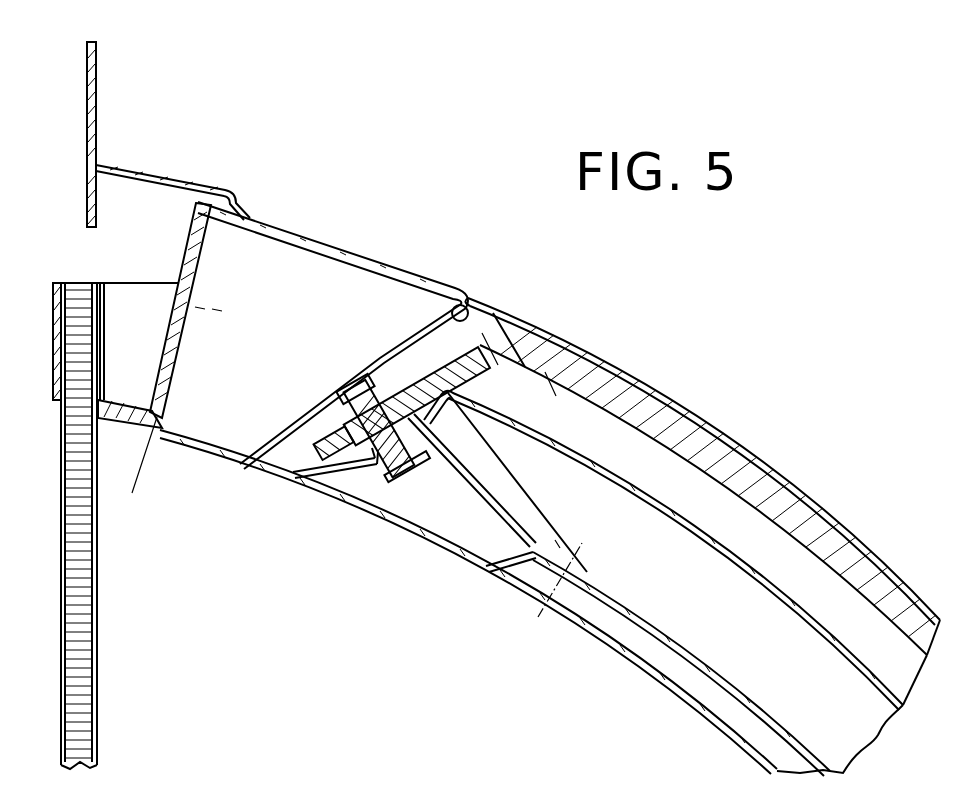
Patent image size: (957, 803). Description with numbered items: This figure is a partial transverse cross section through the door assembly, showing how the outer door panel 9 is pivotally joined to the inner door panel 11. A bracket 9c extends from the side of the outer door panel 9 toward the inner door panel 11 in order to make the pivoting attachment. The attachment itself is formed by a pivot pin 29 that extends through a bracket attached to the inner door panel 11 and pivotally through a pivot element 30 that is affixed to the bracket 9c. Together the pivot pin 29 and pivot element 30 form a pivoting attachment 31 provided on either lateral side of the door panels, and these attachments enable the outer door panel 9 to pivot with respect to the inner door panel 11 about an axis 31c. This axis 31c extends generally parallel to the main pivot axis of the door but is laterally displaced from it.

The outer door panel 9 is at (636, 395).
The bracket 9c is at (417, 380).
The inner door panel 11 is at (667, 656).
The pivot pin 29 is at (382, 446).
The pivot element 30 is at (330, 473).
The fastening assembly 31 is at (391, 464).
The axis 31c is at (417, 478).